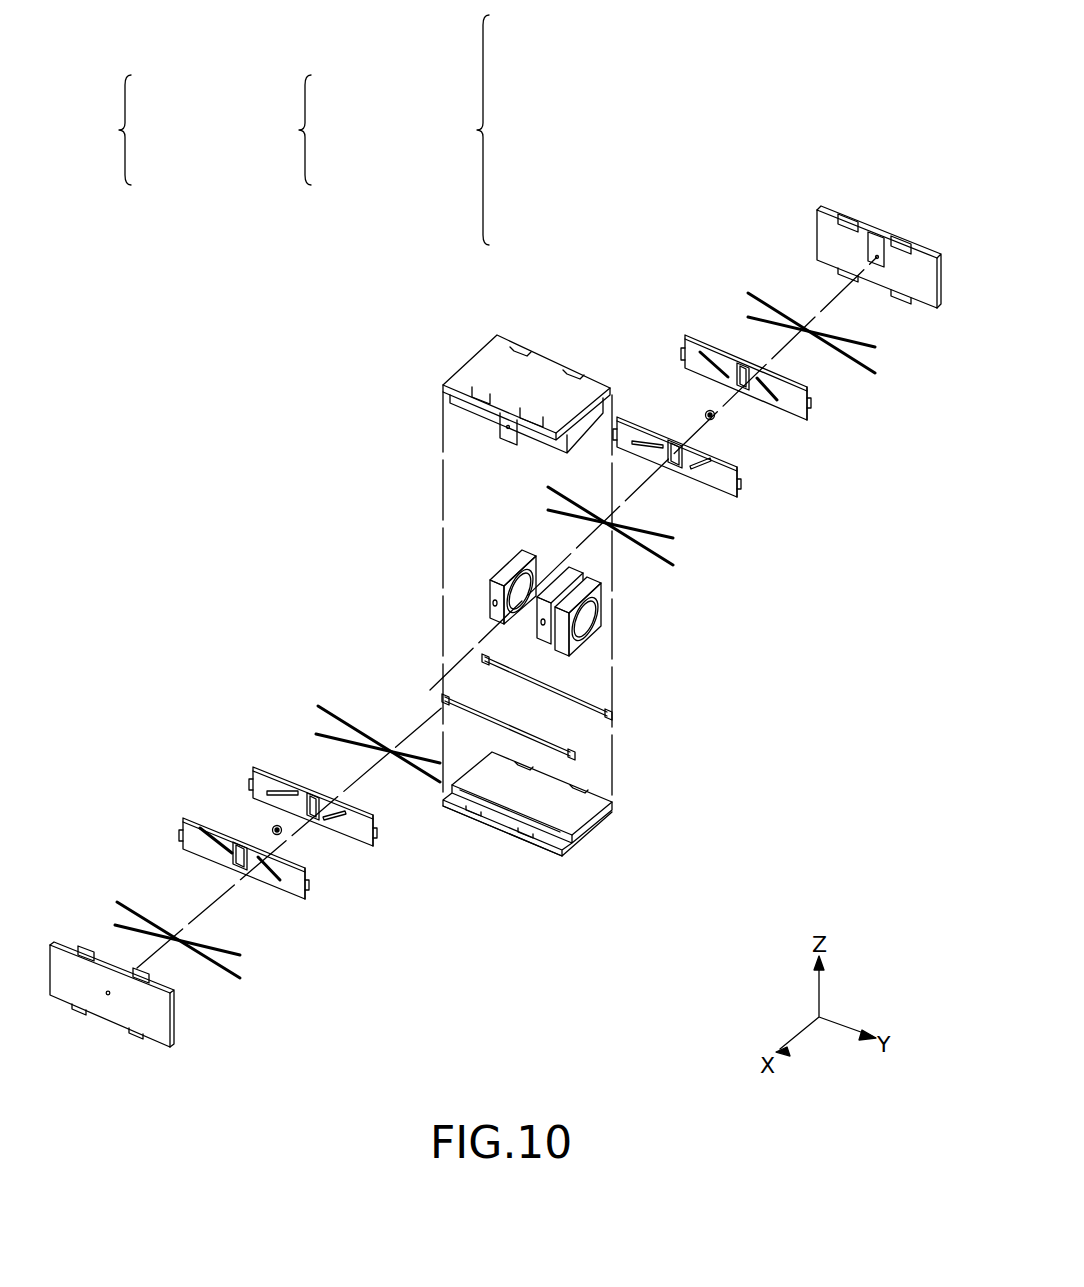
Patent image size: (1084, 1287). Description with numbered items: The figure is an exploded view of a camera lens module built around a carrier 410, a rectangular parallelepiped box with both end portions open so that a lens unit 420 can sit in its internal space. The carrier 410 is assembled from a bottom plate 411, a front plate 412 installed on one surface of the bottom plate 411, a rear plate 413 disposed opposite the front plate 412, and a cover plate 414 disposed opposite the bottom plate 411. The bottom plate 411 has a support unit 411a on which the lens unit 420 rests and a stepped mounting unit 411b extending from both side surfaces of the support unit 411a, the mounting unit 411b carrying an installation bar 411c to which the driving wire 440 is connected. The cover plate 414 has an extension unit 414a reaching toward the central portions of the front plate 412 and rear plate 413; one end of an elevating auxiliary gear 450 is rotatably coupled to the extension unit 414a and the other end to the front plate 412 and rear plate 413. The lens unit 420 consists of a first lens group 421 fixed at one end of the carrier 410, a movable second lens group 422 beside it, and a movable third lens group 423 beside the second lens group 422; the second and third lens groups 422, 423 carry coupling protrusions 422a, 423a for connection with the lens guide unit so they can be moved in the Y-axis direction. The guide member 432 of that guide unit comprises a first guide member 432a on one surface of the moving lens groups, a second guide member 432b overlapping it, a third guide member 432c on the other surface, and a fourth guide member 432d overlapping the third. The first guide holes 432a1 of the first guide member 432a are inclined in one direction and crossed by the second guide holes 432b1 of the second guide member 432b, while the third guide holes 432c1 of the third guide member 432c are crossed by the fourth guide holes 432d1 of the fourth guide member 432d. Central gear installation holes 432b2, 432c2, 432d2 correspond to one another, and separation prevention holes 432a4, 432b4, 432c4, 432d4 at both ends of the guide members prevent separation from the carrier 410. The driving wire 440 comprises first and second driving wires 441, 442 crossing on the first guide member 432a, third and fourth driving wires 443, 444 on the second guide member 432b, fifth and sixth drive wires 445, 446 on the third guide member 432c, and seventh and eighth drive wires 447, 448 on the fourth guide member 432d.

The carrier 410 is at (495, 568).
The bottom plate 411 is at (654, 892).
The support unit 411a is at (568, 815).
The mounting unit 411b is at (558, 843).
The installation bar 411c is at (562, 742).
The front plate 412 is at (213, 1051).
The rear plate 413 is at (827, 223).
The cover plate 414 is at (473, 363).
The extension unit 414a is at (507, 427).
The lens unit 420 is at (766, 578).
The first lens group 421 is at (600, 592).
The second lens group 422 is at (565, 566).
The coupling protrusion 422a is at (542, 622).
The third lens group 423 is at (527, 546).
The coupling protrusion 423a is at (494, 603).
The guide member 432 is at (497, 513).
The first guide member 432a is at (253, 778).
The first guide holes 432a1 is at (337, 818).
The separation prevention hole 432a4 is at (374, 819).
The second guide member 432b is at (112, 835).
The second guide holes 432b1 is at (262, 861).
The second gear installation hole 432b2 is at (308, 800).
The separation prevention hole 432b4 is at (304, 869).
The third guide member 432c is at (655, 455).
The third guide holes 432c1 is at (702, 466).
The third gear installation hole 432c2 is at (632, 440).
The separation prevention hole 432c4 is at (738, 470).
The fourth guide member 432d is at (710, 380).
The fourth guide holes 432d1 is at (778, 400).
The fourth gear installation hole 432d2 is at (700, 348).
The separation prevention hole 432d4 is at (808, 387).
The driving wire 440 is at (495, 517).
The first driving wire 441 is at (318, 706).
The second driving wire 442 is at (314, 733).
The third driving wire 443 is at (257, 1007).
The fourth driving wire 444 is at (287, 979).
The fifth drive wire 445 is at (548, 487).
The sixth drive wire 446 is at (548, 510).
The seventh drive wire 447 is at (760, 290).
The eighth drive wire 448 is at (750, 320).
The elevating auxiliary gear 450 is at (714, 417).